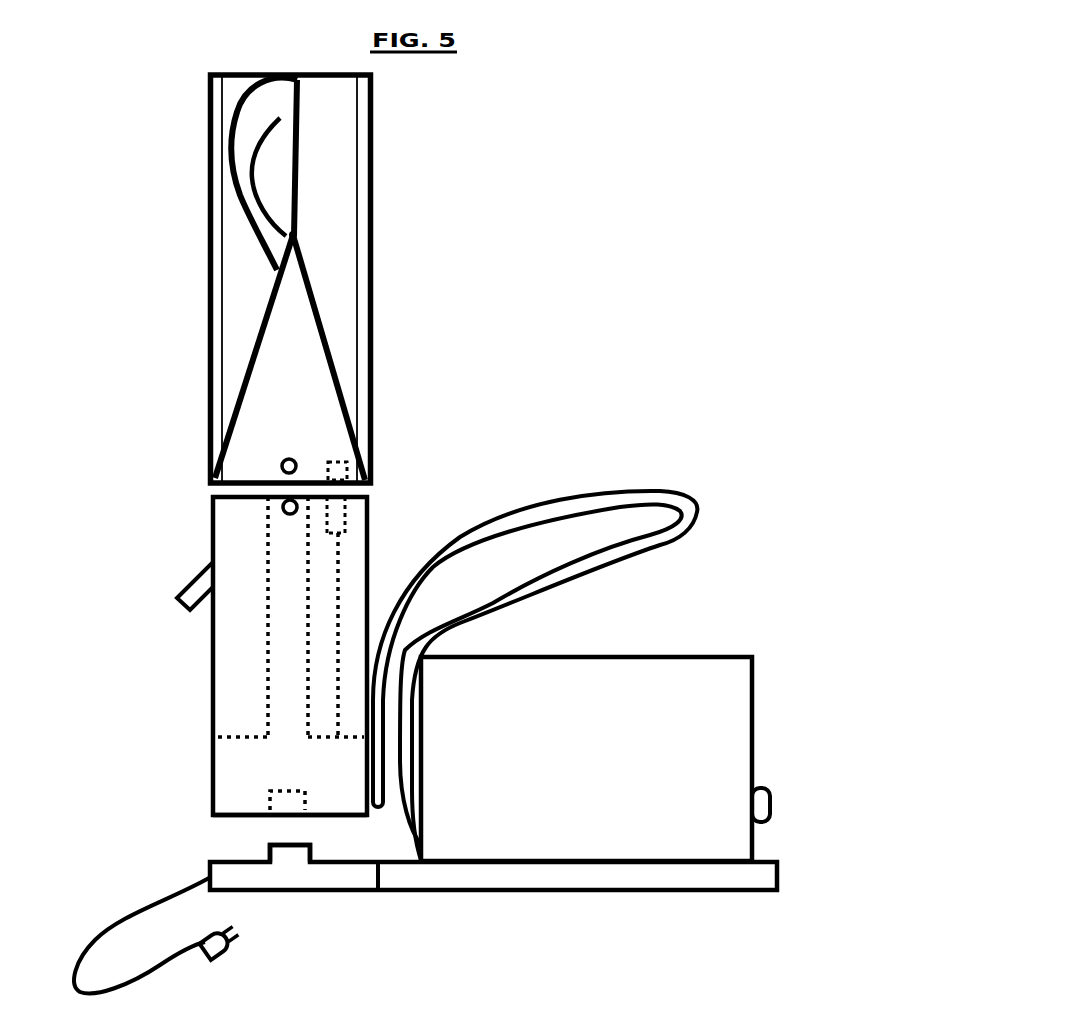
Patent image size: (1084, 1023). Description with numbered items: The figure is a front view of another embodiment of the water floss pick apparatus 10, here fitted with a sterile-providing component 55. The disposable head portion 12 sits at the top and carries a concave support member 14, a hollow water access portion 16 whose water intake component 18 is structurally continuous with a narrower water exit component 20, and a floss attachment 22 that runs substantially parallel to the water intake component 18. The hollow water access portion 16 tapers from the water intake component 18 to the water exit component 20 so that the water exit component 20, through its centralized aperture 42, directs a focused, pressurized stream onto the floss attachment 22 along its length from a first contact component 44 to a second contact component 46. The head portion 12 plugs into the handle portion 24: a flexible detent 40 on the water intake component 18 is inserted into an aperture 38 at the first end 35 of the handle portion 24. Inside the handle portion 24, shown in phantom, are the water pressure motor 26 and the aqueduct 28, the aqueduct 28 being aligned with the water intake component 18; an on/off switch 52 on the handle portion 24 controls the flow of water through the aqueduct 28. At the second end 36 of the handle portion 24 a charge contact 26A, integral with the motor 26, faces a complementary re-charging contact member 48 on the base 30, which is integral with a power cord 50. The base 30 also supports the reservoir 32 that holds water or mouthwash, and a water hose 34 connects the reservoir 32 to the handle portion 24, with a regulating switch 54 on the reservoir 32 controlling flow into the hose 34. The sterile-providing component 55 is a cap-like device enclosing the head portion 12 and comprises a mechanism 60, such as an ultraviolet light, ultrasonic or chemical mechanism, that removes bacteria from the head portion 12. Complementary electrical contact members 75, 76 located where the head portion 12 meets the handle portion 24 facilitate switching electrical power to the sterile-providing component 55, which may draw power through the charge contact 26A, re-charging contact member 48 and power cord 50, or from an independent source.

The apparatus 10 is at (538, 381).
The disposable head portion 12 is at (244, 336).
The concave support member 14 is at (240, 106).
The hollow water access portion 16 is at (338, 364).
The water intake component 18 is at (254, 476).
The water exit component 20 is at (295, 246).
The floss attachment 22 is at (300, 165).
The handle portion 24 is at (188, 707).
The water pressure motor 26 is at (236, 762).
The charge contact 26A is at (302, 800).
The aqueduct 28 is at (268, 659).
The base 30 is at (545, 882).
The reservoir 32 is at (697, 657).
The water hose 34 is at (657, 490).
The first end 35 is at (370, 505).
The second end 36 is at (212, 807).
The aperture 38 is at (282, 509).
The flexible detent 40 is at (281, 464).
The centralized aperture 42 is at (275, 182).
The first contact component 44 is at (325, 225).
The second contact component 46 is at (300, 112).
The re-charging contact member 48 is at (268, 845).
The power cord 50 is at (108, 936).
The on/off switch 52 is at (182, 588).
The regulating switch 54 is at (773, 800).
The sterile-providing component 55 is at (208, 85).
The mechanism 60 is at (214, 238).
The electrical contact member 75 is at (336, 462).
The electrical contact member 76 is at (345, 531).